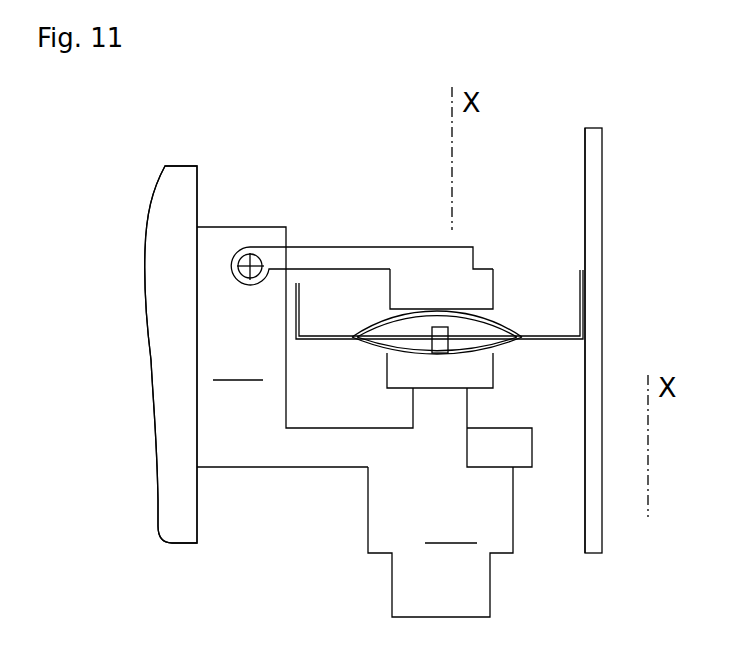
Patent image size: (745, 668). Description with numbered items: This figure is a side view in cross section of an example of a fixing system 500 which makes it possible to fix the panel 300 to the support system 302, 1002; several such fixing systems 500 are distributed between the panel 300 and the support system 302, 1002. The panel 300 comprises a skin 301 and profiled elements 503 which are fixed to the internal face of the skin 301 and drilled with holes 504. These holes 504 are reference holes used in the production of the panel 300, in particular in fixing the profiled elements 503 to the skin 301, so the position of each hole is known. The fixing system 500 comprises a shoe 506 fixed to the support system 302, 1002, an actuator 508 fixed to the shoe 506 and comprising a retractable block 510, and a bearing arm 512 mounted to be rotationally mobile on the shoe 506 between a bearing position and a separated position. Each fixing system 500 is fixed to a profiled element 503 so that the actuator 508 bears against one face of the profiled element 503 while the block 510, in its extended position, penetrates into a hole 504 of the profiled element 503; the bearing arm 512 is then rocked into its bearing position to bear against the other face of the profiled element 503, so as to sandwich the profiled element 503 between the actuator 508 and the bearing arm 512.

The panel 300 is at (630, 132).
The skin 301 is at (595, 230).
The support system 302 is at (172, 500).
The support system 1002 is at (124, 362).
The fixing system 500 is at (296, 175).
The profiled element 503 is at (583, 322).
The hole 504 is at (448, 337).
The shoe 506 is at (364, 347).
The actuator 508 is at (440, 542).
The retractable block 510 is at (436, 327).
The bearing arm 512 is at (338, 258).